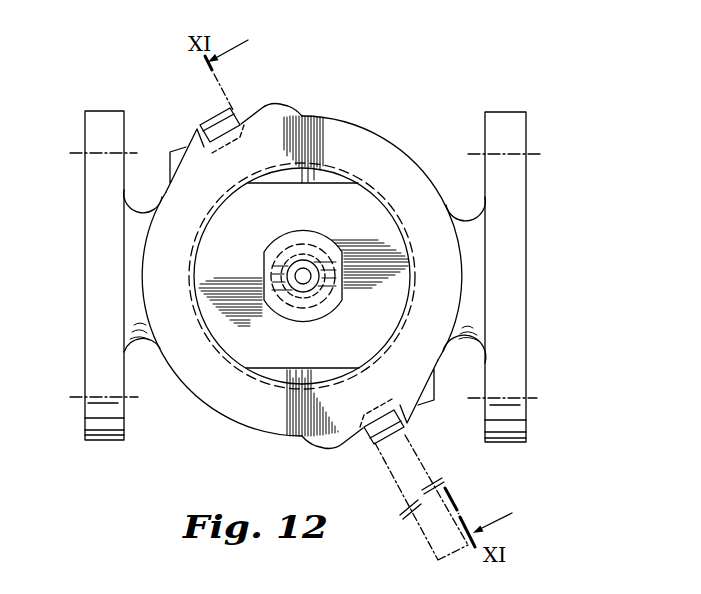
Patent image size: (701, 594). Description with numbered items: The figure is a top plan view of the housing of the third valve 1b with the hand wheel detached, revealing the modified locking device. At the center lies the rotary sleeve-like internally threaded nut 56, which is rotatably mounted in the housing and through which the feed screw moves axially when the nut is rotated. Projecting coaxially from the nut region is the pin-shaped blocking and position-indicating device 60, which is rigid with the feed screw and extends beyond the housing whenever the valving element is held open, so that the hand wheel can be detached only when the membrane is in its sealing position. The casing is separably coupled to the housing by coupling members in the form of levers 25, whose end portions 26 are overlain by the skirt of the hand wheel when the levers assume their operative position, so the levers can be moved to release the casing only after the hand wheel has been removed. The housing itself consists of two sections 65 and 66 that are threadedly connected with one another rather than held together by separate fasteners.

The third valve 1b is at (410, 95).
The levers 25 is at (199, 120).
The end portions of the levers 26 is at (227, 127).
The rotary nut 56 is at (286, 258).
The blocking and position-indicating device 60 is at (312, 270).
The housing section 65 is at (242, 345).
The housing section 66 is at (413, 177).